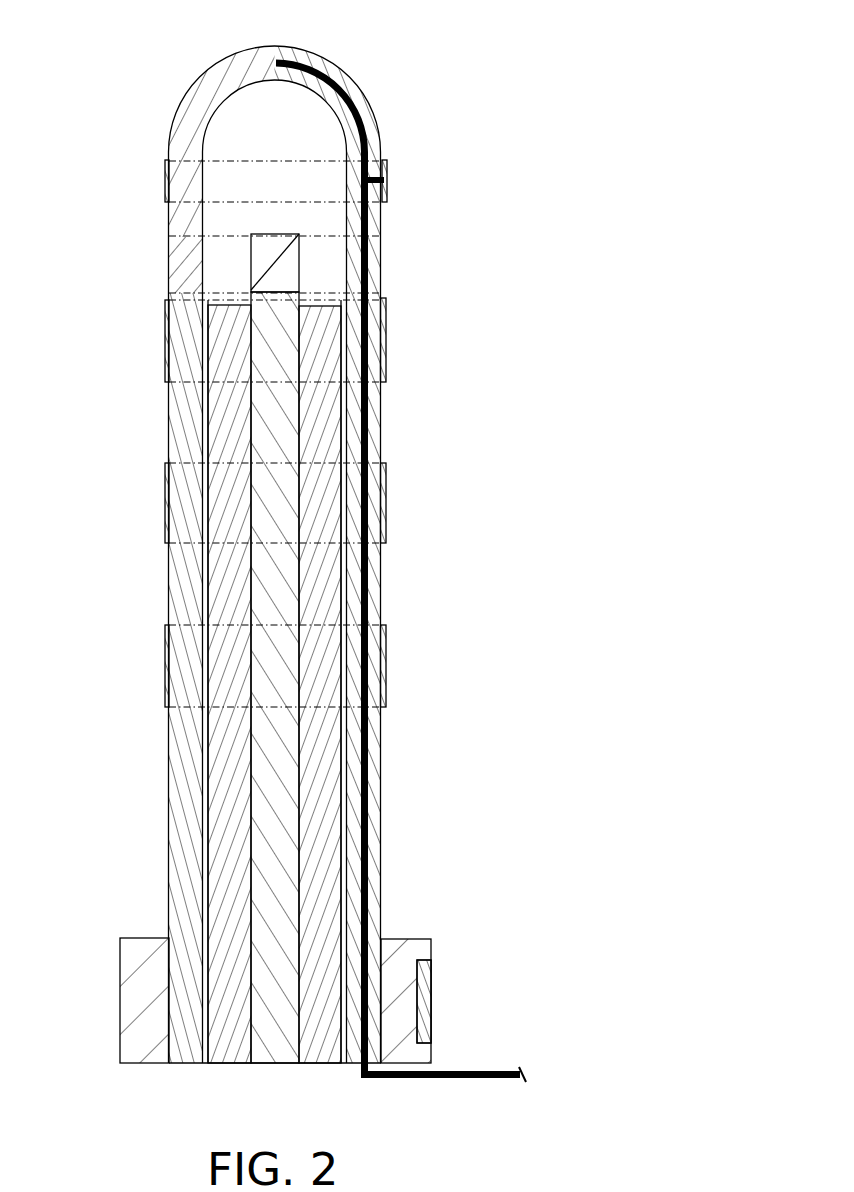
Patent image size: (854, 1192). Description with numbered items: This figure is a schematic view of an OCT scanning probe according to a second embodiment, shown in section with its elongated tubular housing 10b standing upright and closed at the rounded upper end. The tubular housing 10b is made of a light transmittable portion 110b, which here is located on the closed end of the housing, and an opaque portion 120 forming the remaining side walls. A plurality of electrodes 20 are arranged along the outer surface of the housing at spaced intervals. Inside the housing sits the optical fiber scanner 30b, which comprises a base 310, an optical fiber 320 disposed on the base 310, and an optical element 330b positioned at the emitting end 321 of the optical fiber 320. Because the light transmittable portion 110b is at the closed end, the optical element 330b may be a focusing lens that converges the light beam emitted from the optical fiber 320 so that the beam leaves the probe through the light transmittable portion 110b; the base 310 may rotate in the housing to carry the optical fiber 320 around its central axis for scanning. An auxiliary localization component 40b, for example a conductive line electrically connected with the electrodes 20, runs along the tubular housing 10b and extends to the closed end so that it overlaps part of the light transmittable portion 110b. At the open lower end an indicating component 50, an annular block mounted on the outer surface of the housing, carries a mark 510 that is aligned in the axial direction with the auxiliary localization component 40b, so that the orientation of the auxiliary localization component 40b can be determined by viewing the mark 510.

The tubular housing 10b is at (403, 245).
The light transmittable portion 110b is at (258, 67).
The opaque portion 120 is at (377, 218).
The electrode 20 is at (383, 173).
The optical fiber scanner 30b is at (177, 648).
The base 310 is at (230, 457).
The optical fiber 320 is at (263, 372).
The optical element 330b is at (282, 272).
The emitting end 321 is at (208, 266).
The auxiliary localization component 40b is at (368, 440).
The indicating component 50 is at (311, 979).
The mark 510 is at (423, 1013).